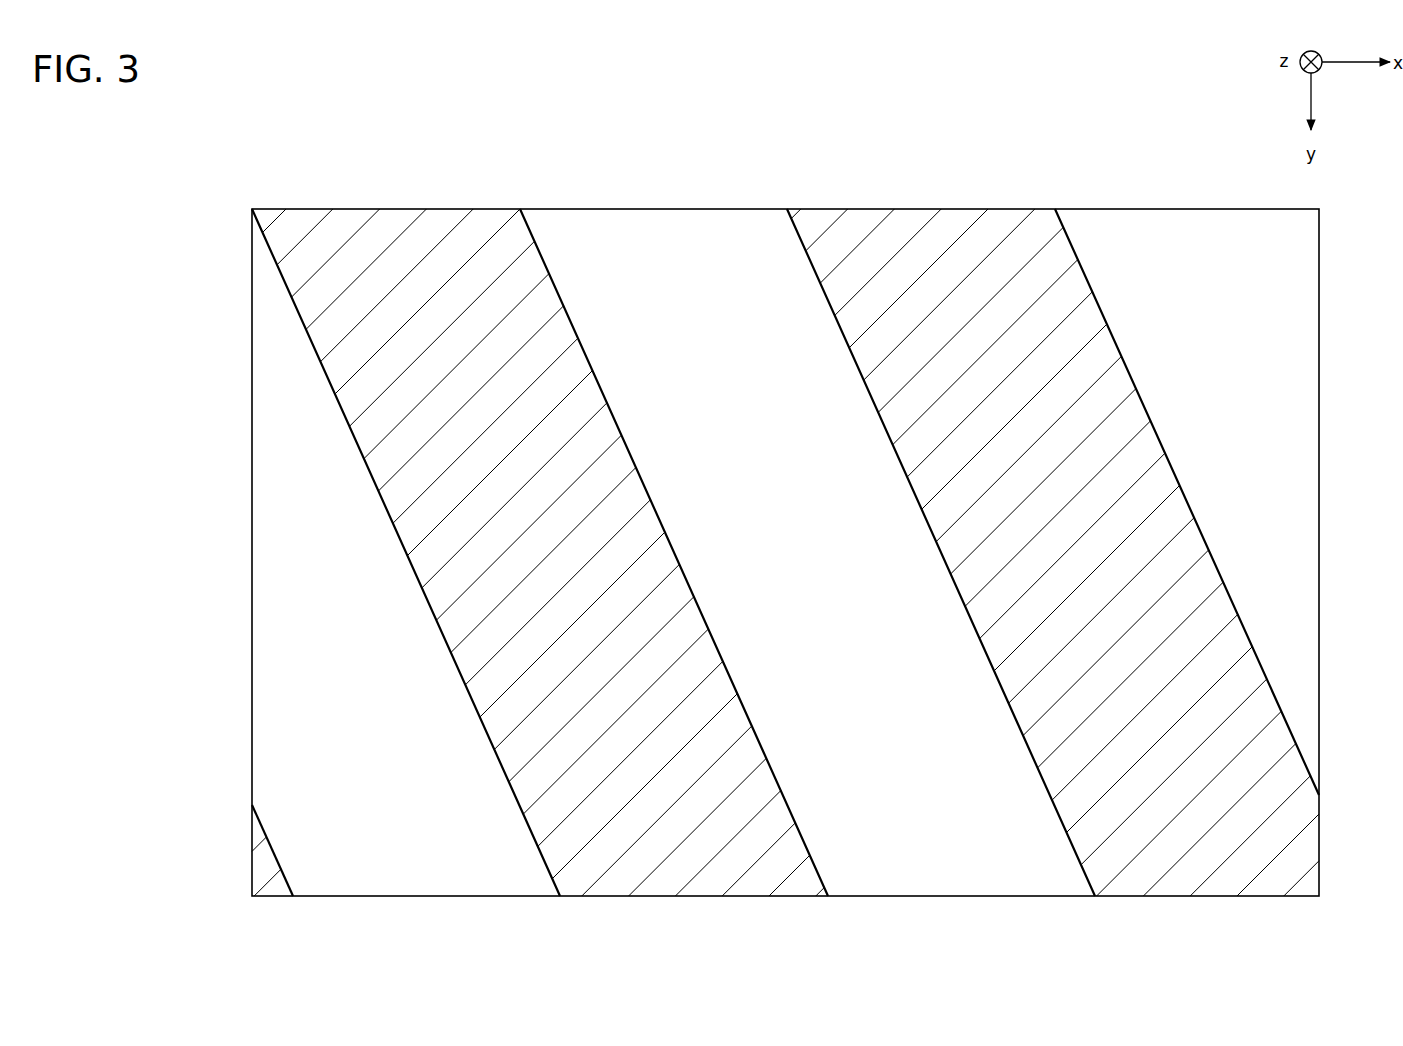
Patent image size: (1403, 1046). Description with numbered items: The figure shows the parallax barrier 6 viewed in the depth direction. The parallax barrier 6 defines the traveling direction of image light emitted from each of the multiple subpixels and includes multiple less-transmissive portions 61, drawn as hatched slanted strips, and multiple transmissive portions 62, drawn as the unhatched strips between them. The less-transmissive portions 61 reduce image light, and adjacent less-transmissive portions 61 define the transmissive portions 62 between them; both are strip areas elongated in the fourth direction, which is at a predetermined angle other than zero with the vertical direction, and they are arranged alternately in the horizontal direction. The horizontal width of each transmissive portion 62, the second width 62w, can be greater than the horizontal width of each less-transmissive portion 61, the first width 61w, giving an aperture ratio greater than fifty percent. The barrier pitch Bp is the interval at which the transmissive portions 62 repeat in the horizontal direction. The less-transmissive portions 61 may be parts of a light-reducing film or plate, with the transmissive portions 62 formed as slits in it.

The parallax barrier 6 is at (785, 512).
The less-transmissive portion 61 is at (685, 875).
The transmissive portion 62 is at (990, 872).
The first width 61w is at (413, 568).
The second width 62w is at (946, 568).
The barrier pitch Bp is at (519, 150).